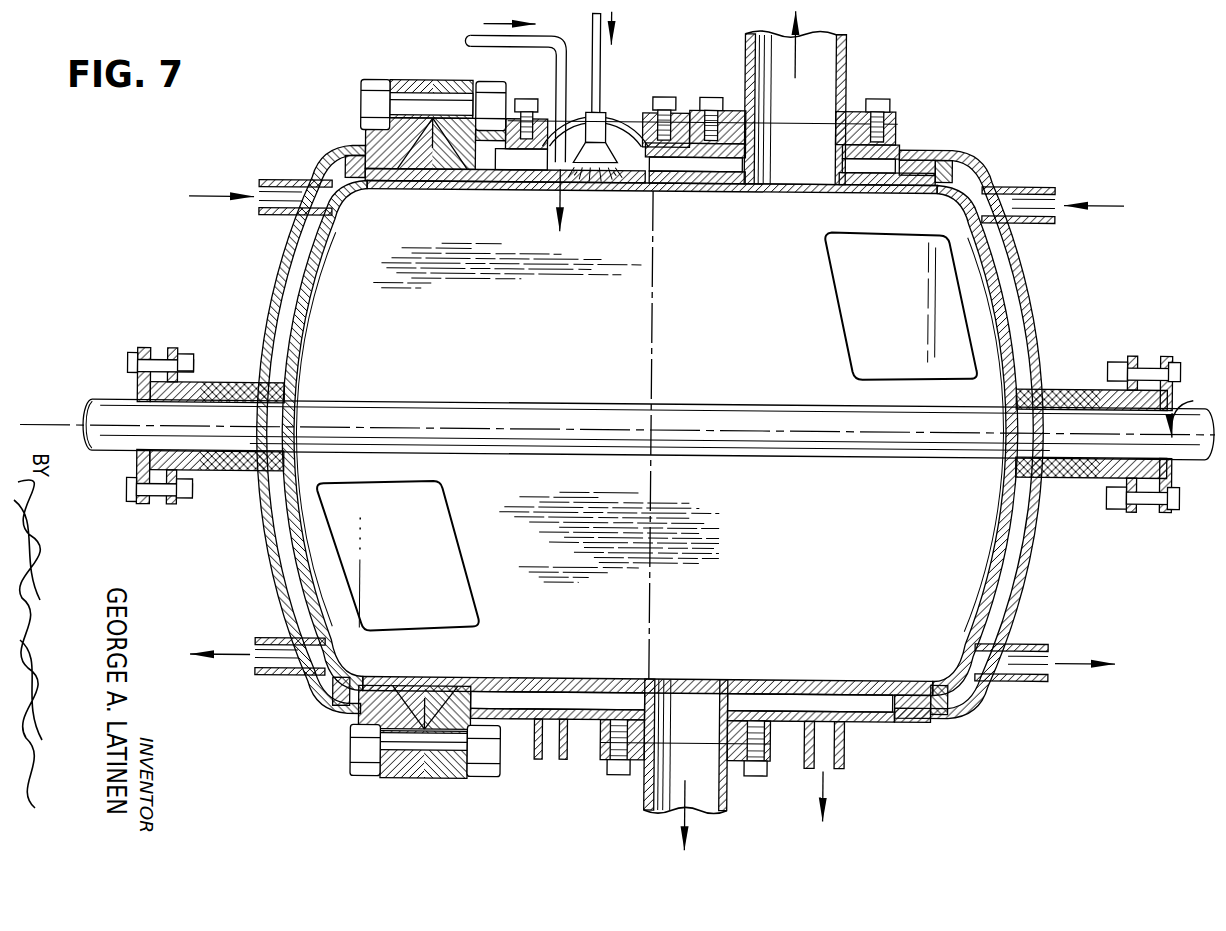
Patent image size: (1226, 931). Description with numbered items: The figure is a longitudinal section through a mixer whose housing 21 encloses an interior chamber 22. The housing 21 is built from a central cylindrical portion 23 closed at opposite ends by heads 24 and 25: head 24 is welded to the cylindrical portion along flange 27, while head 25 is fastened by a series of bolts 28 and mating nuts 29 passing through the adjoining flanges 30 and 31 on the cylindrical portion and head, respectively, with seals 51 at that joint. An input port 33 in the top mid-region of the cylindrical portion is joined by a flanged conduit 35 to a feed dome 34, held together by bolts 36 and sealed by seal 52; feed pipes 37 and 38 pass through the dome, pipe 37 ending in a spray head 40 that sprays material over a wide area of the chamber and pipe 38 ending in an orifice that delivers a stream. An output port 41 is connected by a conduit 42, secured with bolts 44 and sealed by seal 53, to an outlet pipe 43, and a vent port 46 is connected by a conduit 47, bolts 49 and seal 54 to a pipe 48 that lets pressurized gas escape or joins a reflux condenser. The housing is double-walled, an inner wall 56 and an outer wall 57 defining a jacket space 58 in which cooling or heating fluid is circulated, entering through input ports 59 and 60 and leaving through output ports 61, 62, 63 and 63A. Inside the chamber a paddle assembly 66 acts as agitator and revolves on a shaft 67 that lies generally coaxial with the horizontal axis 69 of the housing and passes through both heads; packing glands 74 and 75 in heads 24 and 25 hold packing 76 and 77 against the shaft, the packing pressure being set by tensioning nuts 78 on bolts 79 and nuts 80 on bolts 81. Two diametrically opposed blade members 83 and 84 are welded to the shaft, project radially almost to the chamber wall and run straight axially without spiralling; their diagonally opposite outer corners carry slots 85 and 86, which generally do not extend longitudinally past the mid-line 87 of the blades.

The housing 21 is at (957, 144).
The interior chamber 22 is at (453, 322).
The central cylindrical portion 23 is at (515, 721).
The head 24 is at (1030, 567).
The head 25 is at (262, 552).
The flange 27 is at (917, 713).
The bolts 28 is at (360, 111).
The nuts 29 is at (488, 90).
The flange 30 is at (450, 781).
The flange 31 is at (407, 781).
The input port 33 is at (623, 168).
The feed dome 34 is at (643, 78).
The conduit 35 is at (650, 198).
The bolts 36 is at (525, 100).
The feed pipe 37 is at (598, 72).
The feed pipe 38 is at (468, 38).
The spray head 40 is at (596, 175).
The output port 41 is at (683, 694).
The conduit 42 is at (606, 727).
The outlet pipe 43 is at (650, 793).
The bolts 44 is at (617, 772).
The vent port 46 is at (788, 163).
The conduit 47 is at (823, 170).
The pipe 48 is at (826, 57).
The bolts 49 is at (880, 98).
The seals 51 is at (447, 165).
The seal 52 is at (638, 118).
The seal 53 is at (692, 743).
The seal 54 is at (807, 120).
The inner wall 56 is at (1012, 251).
The outer wall 57 is at (984, 257).
The space 58 is at (1022, 318).
The input port 59 is at (277, 197).
The input port 60 is at (1020, 197).
The output port 61 is at (283, 663).
The output port 62 is at (1020, 664).
The output port 63 is at (827, 748).
The output port 63A is at (551, 755).
The paddle assembly 66 is at (950, 523).
The shaft 67 is at (100, 417).
The axis 69 is at (442, 408).
The packing gland 74 is at (1060, 386).
The packing gland 75 is at (227, 386).
The packing 76 is at (1068, 476).
The packing 77 is at (230, 476).
The tensioning nuts 78 is at (1117, 360).
The bolts 79 is at (1174, 362).
The nuts 80 is at (183, 362).
The bolts 81 is at (128, 368).
The blade member 83 is at (718, 336).
The blade member 84 is at (717, 542).
The slot 85 is at (966, 308).
The slot 86 is at (343, 584).
The mid-line 87 is at (656, 280).